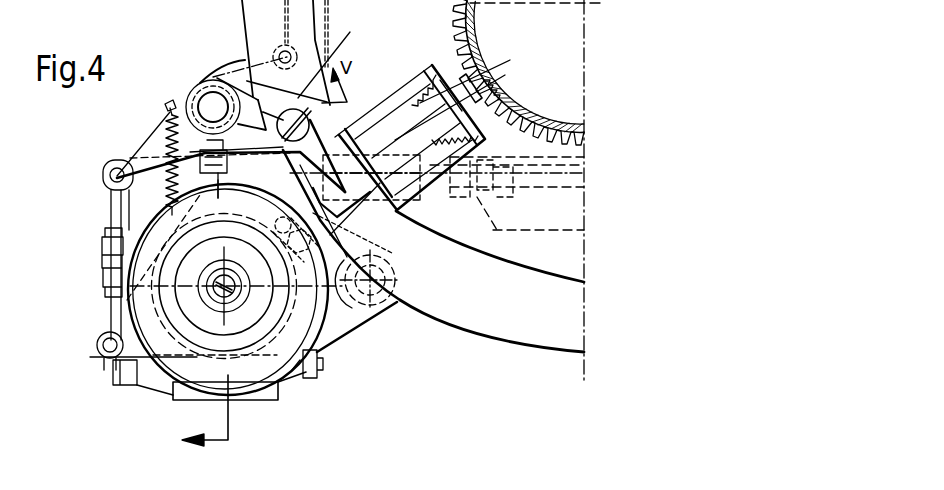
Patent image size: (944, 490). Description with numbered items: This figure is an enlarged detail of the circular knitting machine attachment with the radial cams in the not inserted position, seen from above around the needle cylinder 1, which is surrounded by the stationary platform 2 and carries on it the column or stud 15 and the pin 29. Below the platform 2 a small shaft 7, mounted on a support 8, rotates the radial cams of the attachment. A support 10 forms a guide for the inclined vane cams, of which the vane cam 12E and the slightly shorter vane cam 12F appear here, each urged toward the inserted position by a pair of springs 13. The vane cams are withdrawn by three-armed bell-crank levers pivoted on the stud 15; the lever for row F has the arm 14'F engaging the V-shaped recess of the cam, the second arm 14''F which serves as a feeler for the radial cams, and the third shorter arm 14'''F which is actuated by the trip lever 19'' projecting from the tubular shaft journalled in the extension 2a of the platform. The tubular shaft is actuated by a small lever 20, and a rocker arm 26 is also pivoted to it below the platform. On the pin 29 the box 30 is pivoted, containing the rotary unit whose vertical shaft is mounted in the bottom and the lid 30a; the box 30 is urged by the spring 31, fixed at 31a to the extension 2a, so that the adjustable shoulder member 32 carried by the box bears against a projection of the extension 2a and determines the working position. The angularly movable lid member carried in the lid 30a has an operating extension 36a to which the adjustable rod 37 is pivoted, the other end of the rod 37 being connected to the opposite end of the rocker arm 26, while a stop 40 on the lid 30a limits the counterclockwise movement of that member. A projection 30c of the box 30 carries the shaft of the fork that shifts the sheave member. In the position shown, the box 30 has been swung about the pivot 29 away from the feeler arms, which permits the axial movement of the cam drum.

The needle cylinder 1 is at (474, 45).
The stationary platform 2 is at (476, 328).
The extension of the platform 2a is at (245, 58).
The small shaft 7 is at (540, 186).
The support 8 is at (528, 232).
The support 10 is at (388, 212).
The vane cam 12E is at (488, 100).
The vane cam 12F is at (458, 90).
The springs 13 is at (415, 98).
The arm of bell-crank lever 14F 14'F is at (332, 113).
The second arm of bell-crank lever 14F 14''F is at (242, 169).
The third shorter arm of bell-crank lever 14F 14'''F is at (269, 32).
The column or stud 15 is at (332, 58).
The trip lever 19'' is at (213, 88).
The small lever 20 is at (300, 52).
The rocker arm 26 is at (160, 155).
The pin 29 is at (387, 318).
The box 30 is at (352, 322).
The lid of the box 30a is at (290, 365).
The projection of the box 30c is at (258, 390).
The spring 31 is at (168, 140).
The fixing point of the spring 31a is at (168, 104).
The adjustable shoulder member 32 is at (150, 158).
The operating extension of the lid member 36a is at (112, 322).
The adjustable rod 37 is at (108, 211).
The stop 40 is at (280, 216).